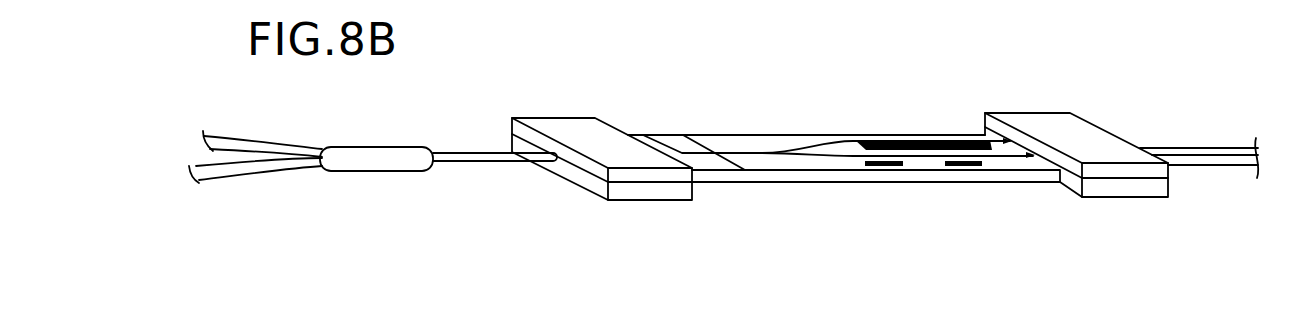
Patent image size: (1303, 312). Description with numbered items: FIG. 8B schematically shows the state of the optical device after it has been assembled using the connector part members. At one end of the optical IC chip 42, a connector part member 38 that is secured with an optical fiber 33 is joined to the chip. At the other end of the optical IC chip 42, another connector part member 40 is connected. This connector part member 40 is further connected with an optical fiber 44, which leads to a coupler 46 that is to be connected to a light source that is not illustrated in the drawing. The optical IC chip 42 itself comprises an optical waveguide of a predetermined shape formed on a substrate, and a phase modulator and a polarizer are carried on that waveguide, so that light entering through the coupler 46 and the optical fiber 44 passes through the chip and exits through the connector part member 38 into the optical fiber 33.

The optical fiber 33 is at (1220, 148).
The connector part member 38 is at (1072, 128).
The connector part member 40 is at (548, 125).
The optical IC chip 42 is at (800, 134).
The optical fiber 44 is at (495, 163).
The coupler 46 is at (394, 163).